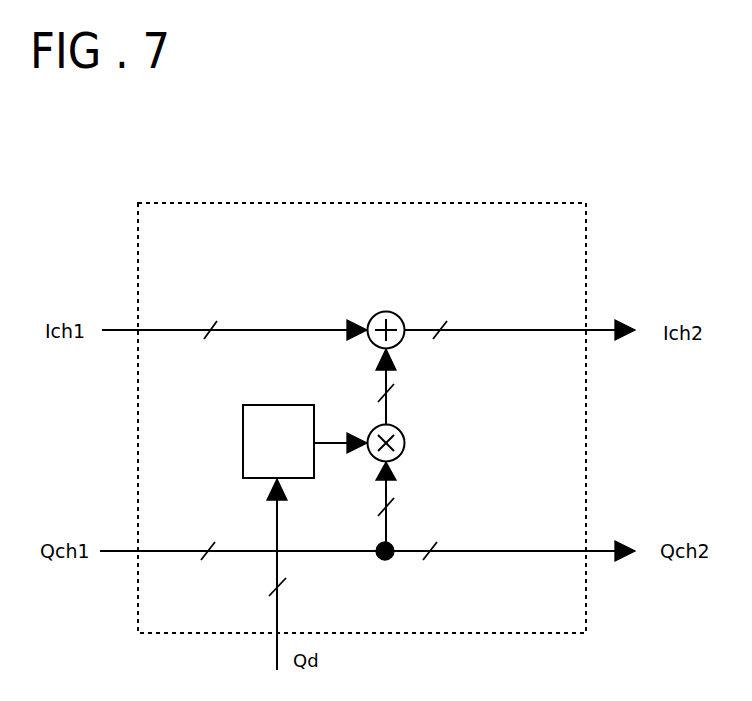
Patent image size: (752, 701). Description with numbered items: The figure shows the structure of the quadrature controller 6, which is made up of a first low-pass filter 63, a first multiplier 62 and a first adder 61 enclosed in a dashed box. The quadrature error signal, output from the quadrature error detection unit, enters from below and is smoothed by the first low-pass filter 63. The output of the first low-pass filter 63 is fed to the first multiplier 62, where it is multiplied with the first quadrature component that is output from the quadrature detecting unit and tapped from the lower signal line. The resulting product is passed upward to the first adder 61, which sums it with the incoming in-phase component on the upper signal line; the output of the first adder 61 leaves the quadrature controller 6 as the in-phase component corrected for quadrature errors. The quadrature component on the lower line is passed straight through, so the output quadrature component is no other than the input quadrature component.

The quadrature controller 6 is at (165, 203).
The first adder 61 is at (403, 340).
The first multiplier 62 is at (403, 452).
The first low-pass filter 63 is at (295, 405).